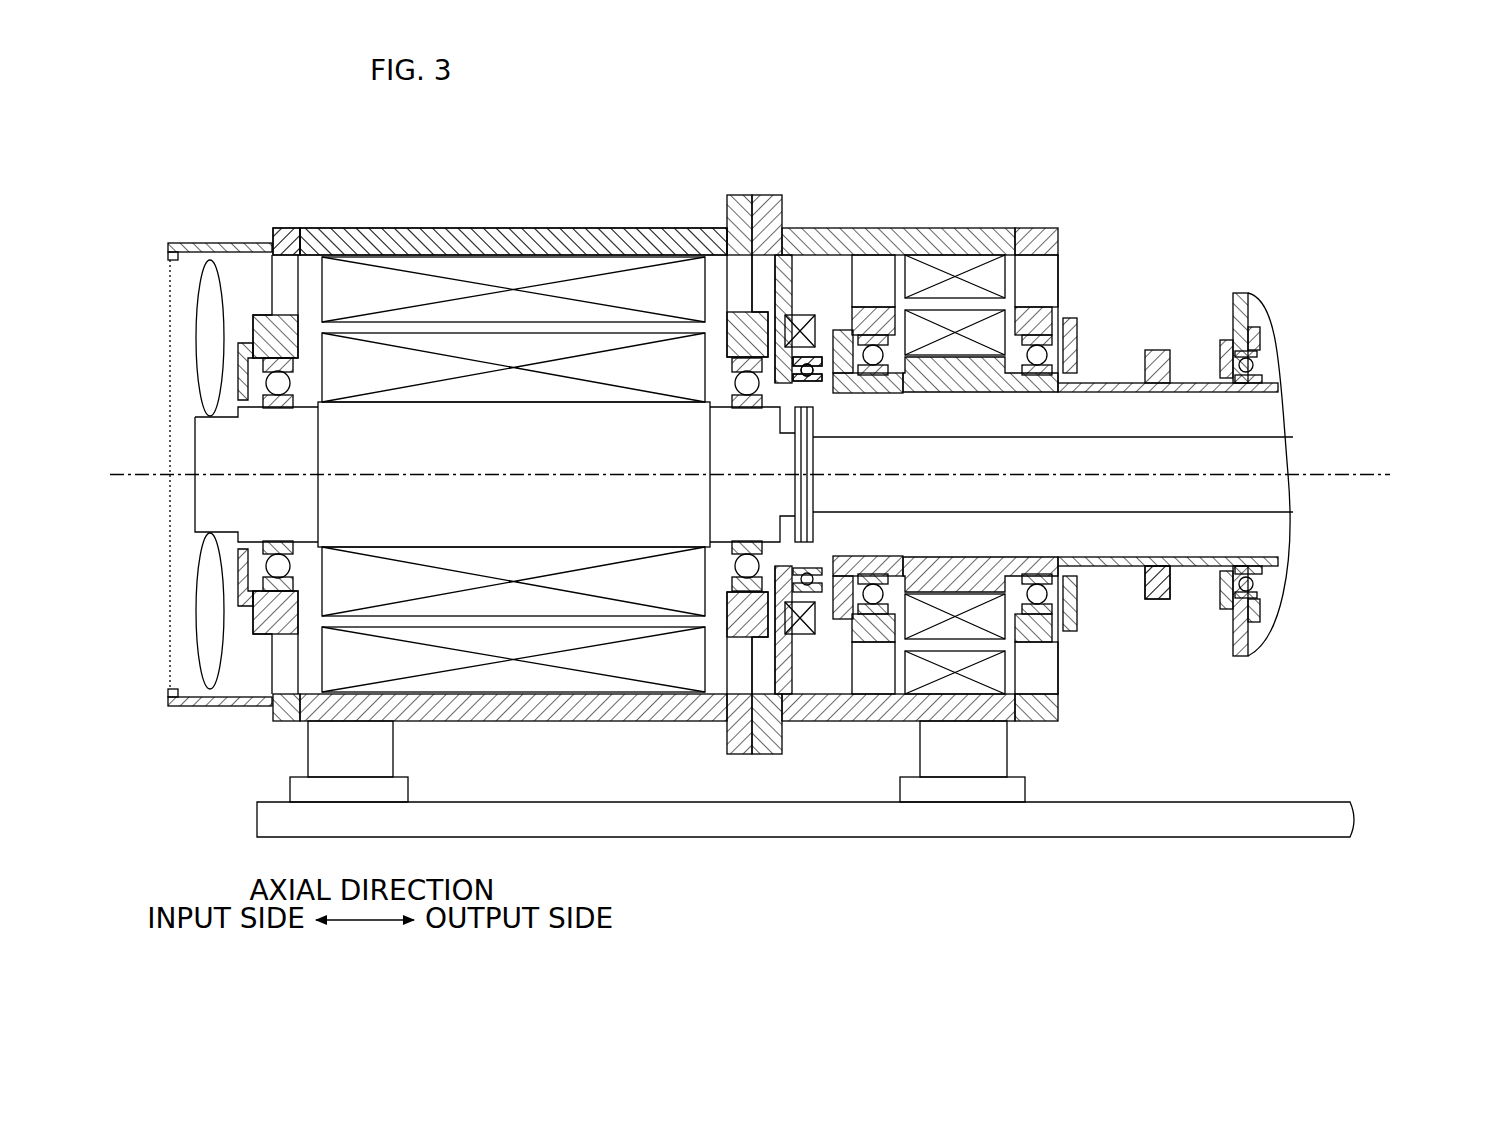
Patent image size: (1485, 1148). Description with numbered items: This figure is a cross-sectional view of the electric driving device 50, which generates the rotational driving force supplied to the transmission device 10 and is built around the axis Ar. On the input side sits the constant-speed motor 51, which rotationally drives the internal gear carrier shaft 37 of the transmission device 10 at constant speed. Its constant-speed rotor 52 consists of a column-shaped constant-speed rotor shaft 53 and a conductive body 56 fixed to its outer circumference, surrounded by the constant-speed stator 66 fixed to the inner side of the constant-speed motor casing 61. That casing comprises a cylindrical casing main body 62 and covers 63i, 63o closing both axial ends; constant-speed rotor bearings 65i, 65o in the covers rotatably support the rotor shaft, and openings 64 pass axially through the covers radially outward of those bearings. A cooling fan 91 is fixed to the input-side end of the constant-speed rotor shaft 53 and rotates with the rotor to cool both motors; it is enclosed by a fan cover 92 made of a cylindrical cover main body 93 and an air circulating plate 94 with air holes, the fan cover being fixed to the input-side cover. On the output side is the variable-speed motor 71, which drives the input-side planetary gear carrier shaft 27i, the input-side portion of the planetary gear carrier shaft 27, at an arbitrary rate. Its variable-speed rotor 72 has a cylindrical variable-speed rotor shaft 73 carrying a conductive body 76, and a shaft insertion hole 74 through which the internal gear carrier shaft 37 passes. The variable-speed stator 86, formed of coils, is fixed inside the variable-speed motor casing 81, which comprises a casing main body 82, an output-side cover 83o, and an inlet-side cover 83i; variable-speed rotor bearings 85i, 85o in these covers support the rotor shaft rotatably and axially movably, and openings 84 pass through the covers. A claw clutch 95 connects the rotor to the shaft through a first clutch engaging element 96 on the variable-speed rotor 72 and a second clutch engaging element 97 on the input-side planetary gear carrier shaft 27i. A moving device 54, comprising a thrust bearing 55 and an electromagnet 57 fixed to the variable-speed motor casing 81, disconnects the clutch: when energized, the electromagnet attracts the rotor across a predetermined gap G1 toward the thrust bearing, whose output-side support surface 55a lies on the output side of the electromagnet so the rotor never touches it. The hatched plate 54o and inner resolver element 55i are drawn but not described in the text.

The transmission device 10 is at (1308, 606).
The planetary gear carrier shaft 27 is at (1168, 561).
The input-side planetary gear carrier shaft 27i is at (1282, 385).
The internal gear carrier shaft 37 is at (1268, 500).
The electric driving device 50 is at (284, 220).
The constant-speed motor 51 is at (300, 222).
The constant-speed rotor 52 is at (455, 620).
The constant-speed rotor shaft 53 is at (607, 520).
The moving device 54 is at (808, 228).
The outer end plate 54o is at (793, 230).
The thrust bearing 55 is at (806, 380).
The resolver stator 55i is at (815, 232).
The support surface 55a is at (823, 377).
The conductive body 56 is at (527, 597).
The electromagnet 57 is at (798, 640).
The constant-speed motor casing 61 is at (545, 226).
The casing main body 62 is at (588, 245).
The cover 63i is at (293, 228).
The cover 63o is at (740, 193).
The openings 64 is at (282, 268).
The constant-speed rotor bearing 65i is at (283, 382).
The constant-speed rotor bearing 65o is at (745, 382).
The constant-speed stator 66 is at (487, 272).
The variable-speed motor 71 is at (1040, 222).
The variable-speed rotor 72 is at (873, 908).
The variable-speed rotor shaft 73 is at (923, 580).
The shaft insertion hole 74 is at (886, 556).
The conductive body 76 is at (963, 688).
The variable-speed motor casing 81 is at (945, 224).
The casing main body 82 is at (970, 240).
The inlet-side cover 83i is at (885, 240).
The output-side cover 83o is at (1025, 235).
The openings 84 is at (858, 238).
The variable-speed rotor bearing 85i is at (845, 328).
The variable-speed rotor bearing 85o is at (1070, 310).
The variable-speed stator 86 is at (1000, 240).
The cooling fan 91 is at (208, 262).
The fan cover 92 is at (220, 798).
The cover main body 93 is at (195, 708).
The air circulating plate 94 is at (168, 642).
The claw clutch 95 is at (1163, 345).
The first clutch engaging element 96 is at (1152, 602).
The second clutch engaging element 97 is at (1166, 602).
The gap G1 is at (810, 692).
The axis Ar is at (1312, 475).